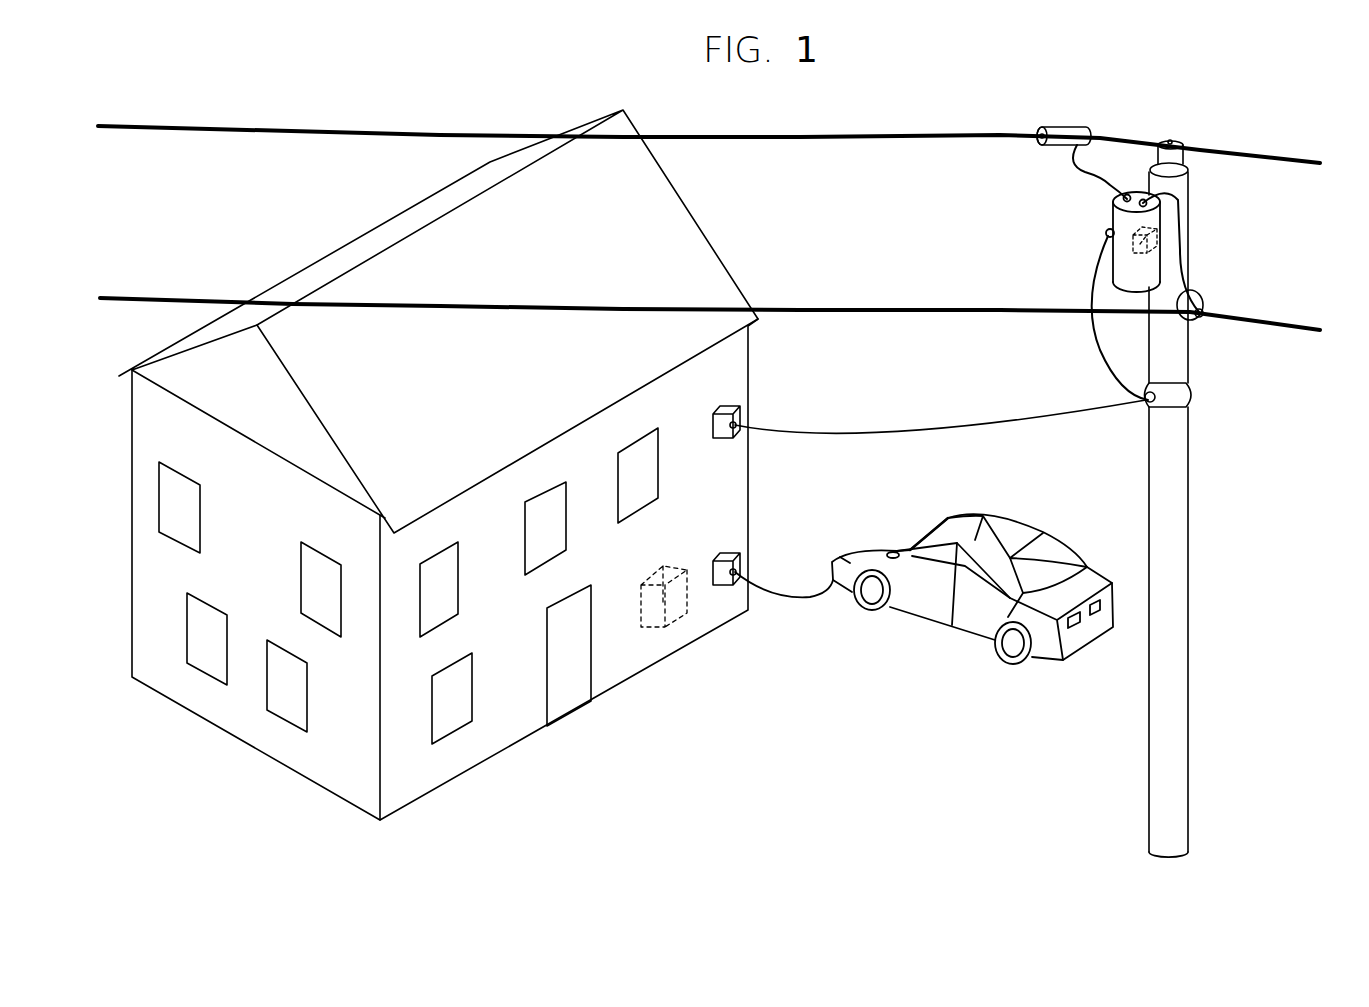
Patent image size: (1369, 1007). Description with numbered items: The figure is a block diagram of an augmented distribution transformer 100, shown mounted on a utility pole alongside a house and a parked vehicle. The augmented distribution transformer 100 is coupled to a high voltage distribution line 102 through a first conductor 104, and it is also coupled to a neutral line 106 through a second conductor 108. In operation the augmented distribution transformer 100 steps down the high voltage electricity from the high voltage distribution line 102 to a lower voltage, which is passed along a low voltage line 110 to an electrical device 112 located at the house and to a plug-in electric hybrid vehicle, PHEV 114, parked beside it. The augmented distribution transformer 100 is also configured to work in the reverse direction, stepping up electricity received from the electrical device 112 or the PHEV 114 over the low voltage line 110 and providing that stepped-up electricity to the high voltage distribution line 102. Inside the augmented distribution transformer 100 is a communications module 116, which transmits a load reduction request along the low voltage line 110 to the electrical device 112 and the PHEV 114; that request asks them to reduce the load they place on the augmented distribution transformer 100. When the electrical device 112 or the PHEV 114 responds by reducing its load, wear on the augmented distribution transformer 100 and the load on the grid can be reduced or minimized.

The augmented distribution transformer 100 is at (1100, 213).
The high voltage distribution line 102 is at (840, 140).
The first conductor 104 is at (1077, 172).
The neutral line 106 is at (1273, 327).
The second conductor 108 is at (1182, 215).
The low voltage line 110 is at (917, 430).
The electrical device 112 is at (684, 616).
The plug-in electric hybrid vehicle (PHEV) 114 is at (1050, 663).
The communications module 116 is at (1155, 243).